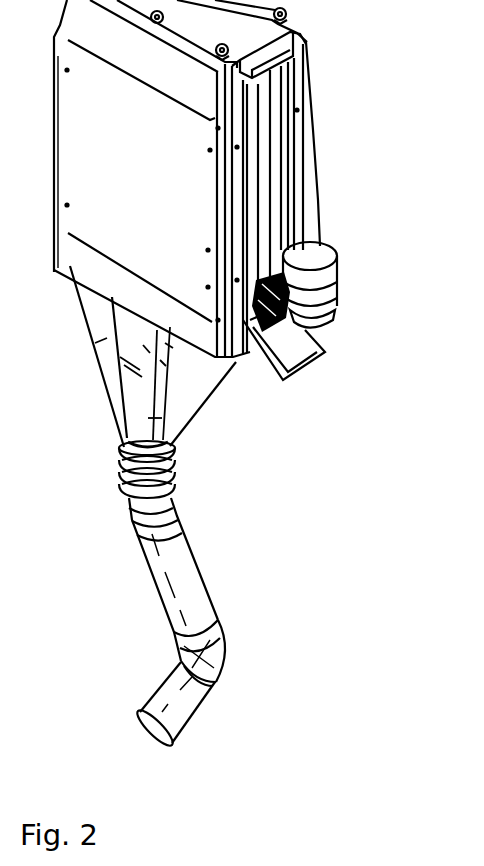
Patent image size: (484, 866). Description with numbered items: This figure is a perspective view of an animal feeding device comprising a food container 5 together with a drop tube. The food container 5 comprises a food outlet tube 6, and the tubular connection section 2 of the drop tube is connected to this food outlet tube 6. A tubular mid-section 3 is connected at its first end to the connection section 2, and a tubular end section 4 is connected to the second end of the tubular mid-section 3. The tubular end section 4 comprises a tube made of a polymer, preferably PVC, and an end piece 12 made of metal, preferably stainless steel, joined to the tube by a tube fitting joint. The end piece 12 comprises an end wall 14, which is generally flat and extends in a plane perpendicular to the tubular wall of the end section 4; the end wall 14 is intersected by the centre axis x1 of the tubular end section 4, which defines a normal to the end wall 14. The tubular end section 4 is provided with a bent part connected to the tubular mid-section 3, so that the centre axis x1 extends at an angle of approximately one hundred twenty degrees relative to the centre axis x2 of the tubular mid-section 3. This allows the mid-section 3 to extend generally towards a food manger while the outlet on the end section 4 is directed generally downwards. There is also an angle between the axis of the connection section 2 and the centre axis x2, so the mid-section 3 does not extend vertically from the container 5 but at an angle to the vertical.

The food container 5 is at (288, 152).
The food outlet tube 6 is at (137, 409).
The tubular connection section 2 is at (170, 462).
The tubular mid-section 3 is at (186, 560).
The tubular end section 4 is at (224, 668).
The end piece 12 is at (163, 683).
The end wall 14 is at (143, 712).
The centre axis of the tubular end section x1 is at (158, 733).
The centre axis of the tubular mid-section x2 is at (192, 642).